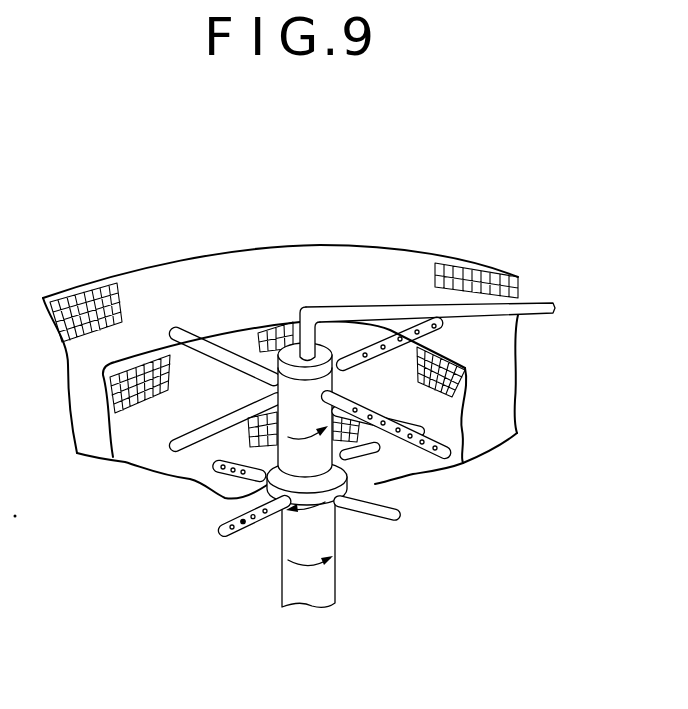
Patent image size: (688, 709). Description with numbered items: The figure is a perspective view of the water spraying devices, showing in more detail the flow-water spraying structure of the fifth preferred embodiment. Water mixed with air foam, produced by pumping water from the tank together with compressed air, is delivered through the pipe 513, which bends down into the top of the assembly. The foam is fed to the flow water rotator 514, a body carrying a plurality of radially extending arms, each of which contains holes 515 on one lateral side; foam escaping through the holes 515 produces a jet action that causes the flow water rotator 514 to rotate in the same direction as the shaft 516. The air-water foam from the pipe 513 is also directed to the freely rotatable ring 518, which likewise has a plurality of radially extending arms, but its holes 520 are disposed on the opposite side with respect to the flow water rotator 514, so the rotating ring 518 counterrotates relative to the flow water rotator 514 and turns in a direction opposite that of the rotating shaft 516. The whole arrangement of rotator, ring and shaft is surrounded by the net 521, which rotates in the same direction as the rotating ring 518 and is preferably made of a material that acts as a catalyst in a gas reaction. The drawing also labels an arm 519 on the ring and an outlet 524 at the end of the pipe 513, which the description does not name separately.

The pipe 513 is at (404, 308).
The flow water rotator 514 is at (228, 355).
The holes 515 is at (365, 355).
The shaft 516 is at (262, 477).
The freely rotatable ring 518 is at (343, 487).
The radial arm 519 is at (375, 515).
The holes 520 is at (264, 517).
The net 521 is at (173, 360).
The pipe elbow outlet 524 is at (293, 355).